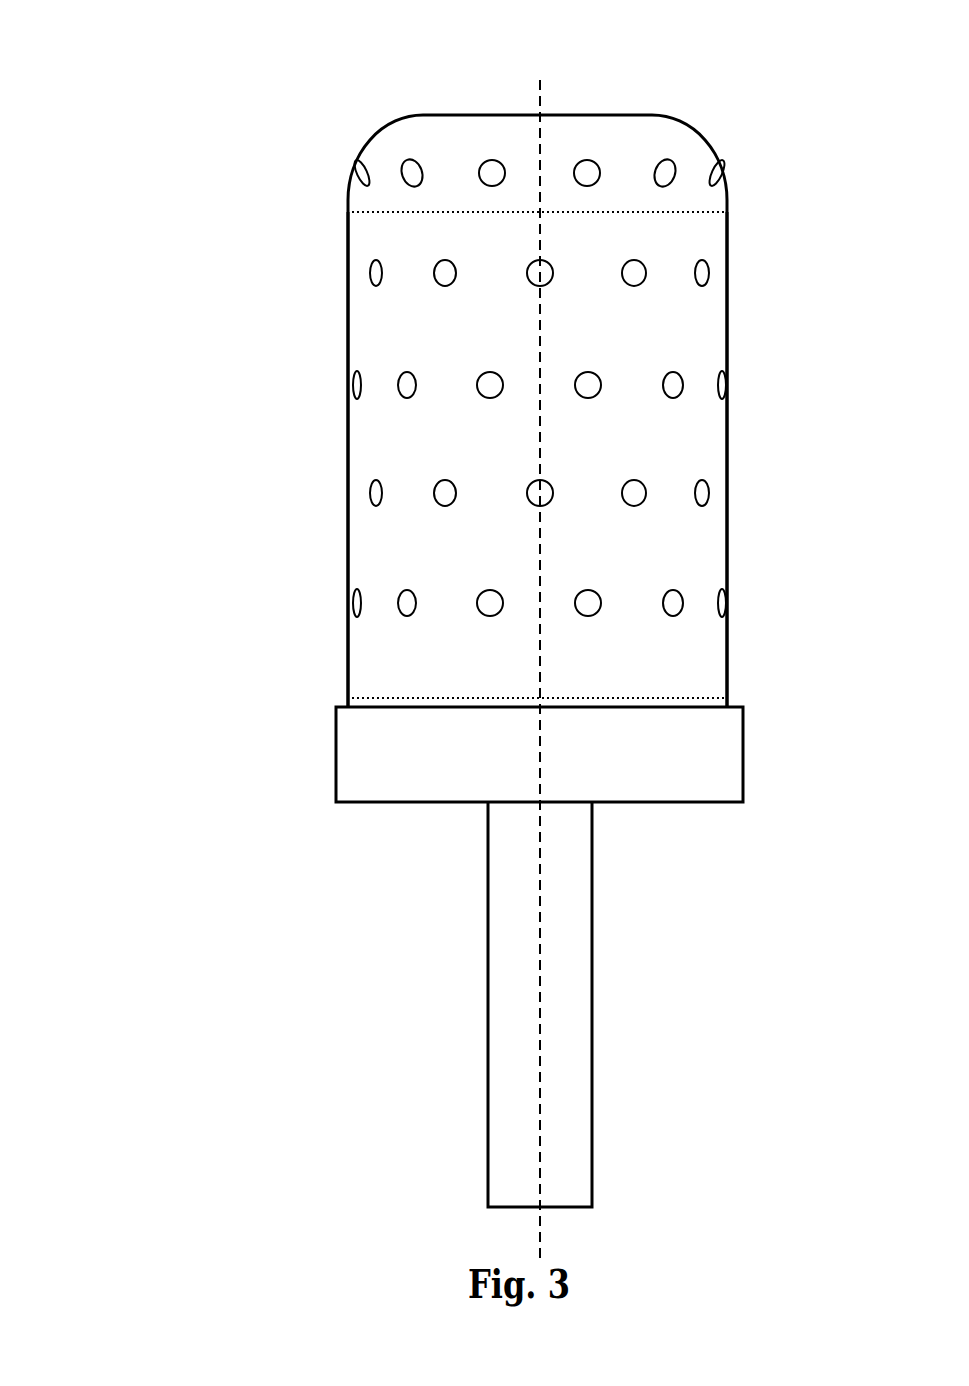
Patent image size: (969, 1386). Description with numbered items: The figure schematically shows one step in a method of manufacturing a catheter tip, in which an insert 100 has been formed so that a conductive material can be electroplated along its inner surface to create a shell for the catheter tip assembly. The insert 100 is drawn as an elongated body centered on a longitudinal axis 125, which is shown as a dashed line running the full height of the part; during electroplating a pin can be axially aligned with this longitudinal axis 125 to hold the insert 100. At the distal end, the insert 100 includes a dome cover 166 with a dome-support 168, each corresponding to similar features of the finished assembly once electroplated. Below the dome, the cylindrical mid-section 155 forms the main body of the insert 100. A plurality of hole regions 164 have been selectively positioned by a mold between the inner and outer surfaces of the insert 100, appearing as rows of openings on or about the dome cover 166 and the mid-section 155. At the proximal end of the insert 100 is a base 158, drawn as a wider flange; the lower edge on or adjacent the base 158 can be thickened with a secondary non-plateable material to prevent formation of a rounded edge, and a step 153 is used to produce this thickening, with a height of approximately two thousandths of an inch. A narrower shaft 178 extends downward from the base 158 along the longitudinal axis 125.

The insert 100 is at (158, 80).
The dome cover 166 is at (702, 130).
The dome-support 168 is at (400, 137).
The mid-section 155 is at (385, 437).
The hole regions 164 is at (647, 278).
The step 153 is at (365, 697).
The base 158 is at (370, 750).
The stem 178 is at (503, 987).
The longitudinal axis 125 is at (538, 1233).